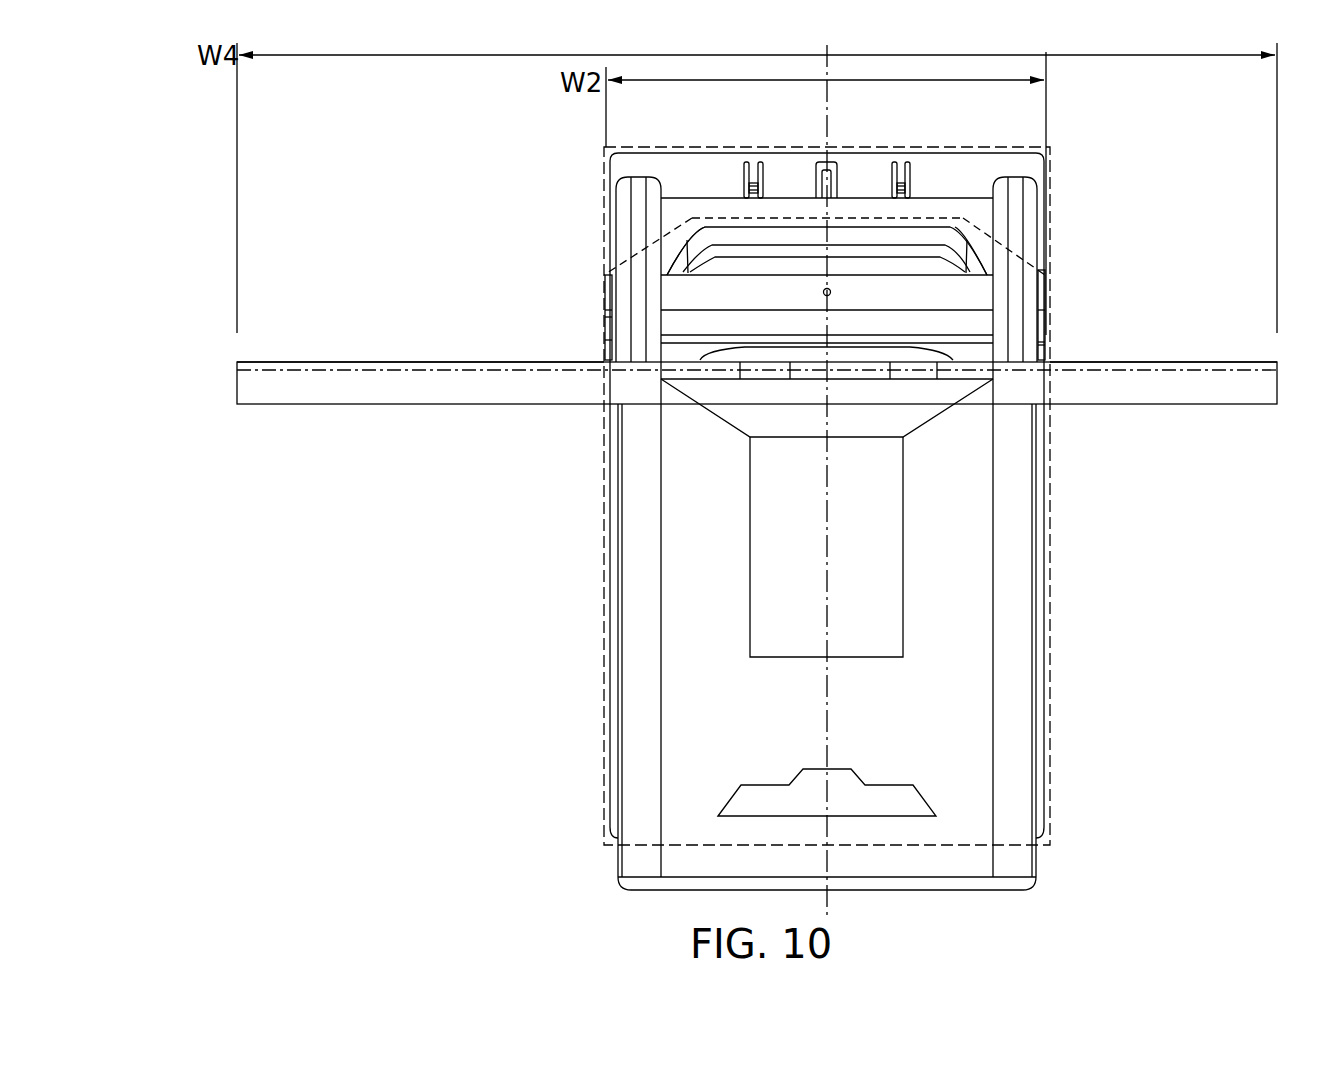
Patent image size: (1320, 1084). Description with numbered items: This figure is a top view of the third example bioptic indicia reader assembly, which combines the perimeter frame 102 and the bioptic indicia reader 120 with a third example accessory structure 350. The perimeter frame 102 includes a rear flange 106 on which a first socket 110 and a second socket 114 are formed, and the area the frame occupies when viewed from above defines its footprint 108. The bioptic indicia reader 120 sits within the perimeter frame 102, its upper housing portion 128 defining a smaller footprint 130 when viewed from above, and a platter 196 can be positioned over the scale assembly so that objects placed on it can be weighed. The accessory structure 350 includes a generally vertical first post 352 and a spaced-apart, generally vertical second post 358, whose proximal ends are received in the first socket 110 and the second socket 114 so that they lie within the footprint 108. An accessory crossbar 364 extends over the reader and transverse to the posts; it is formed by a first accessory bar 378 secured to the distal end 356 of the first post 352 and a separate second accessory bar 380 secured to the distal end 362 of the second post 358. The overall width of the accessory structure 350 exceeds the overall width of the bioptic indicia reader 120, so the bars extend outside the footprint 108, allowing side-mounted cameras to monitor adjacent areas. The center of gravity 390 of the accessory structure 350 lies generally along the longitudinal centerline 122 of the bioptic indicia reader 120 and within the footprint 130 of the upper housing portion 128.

The perimeter frame 102 is at (925, 180).
The rear flange 106 is at (827, 495).
The footprint 108 is at (1050, 565).
The first socket 110 is at (640, 177).
The second socket 114 is at (1015, 177).
The bioptic indicia reader 120 is at (667, 269).
The longitudinal centerline 122 is at (829, 903).
The upper housing portion 128 is at (963, 258).
The footprint 130 is at (664, 240).
The platter 196 is at (970, 655).
The accessory structure 350 is at (545, 353).
The first post 352 is at (637, 297).
The distal end 356 is at (625, 351).
The second post 358 is at (1013, 276).
The distal end 362 is at (1034, 356).
The accessory crossbar 364 is at (218, 380).
The first accessory bar 378 is at (363, 360).
The second accessory bar 380 is at (1200, 361).
The center of gravity 390 is at (826, 288).